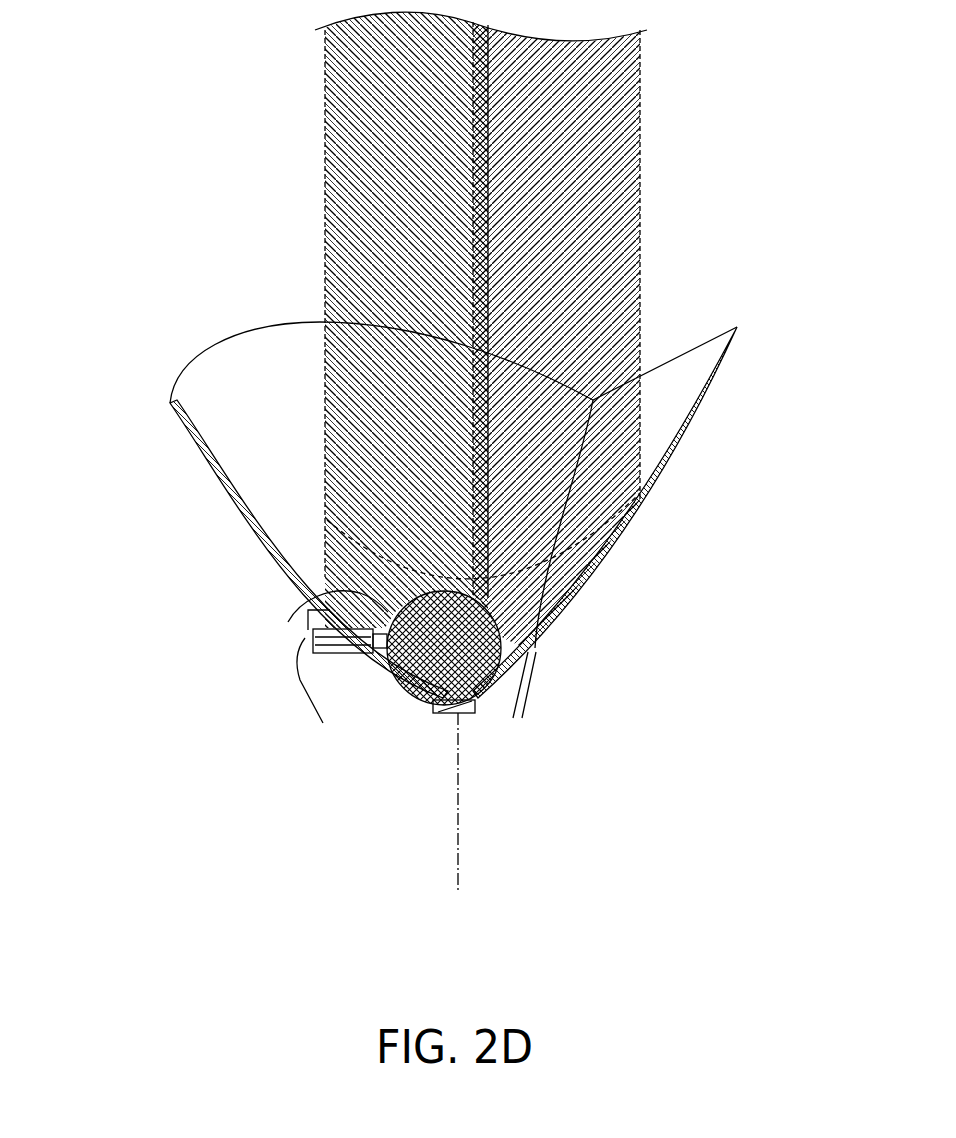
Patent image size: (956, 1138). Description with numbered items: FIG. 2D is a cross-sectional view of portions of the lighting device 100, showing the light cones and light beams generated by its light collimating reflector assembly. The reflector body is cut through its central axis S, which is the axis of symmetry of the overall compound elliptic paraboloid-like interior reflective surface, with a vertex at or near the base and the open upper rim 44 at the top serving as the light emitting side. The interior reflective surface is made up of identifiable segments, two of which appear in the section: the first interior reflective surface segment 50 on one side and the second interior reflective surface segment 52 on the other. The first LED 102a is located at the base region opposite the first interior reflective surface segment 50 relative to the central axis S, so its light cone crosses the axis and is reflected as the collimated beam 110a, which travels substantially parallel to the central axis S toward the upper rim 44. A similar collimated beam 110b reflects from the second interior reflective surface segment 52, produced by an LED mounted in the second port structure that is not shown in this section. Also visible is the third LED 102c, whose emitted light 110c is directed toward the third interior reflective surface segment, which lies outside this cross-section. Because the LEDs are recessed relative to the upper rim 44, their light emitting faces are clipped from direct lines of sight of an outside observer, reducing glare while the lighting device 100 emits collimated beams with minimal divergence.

The lighting device 100 is at (215, 195).
The collimated beam 110a is at (612, 205).
The collimated beam 110b is at (352, 190).
The light emitted from the third LED 110c is at (382, 607).
The upper rim 44 is at (222, 330).
The first interior reflective surface segment 50 is at (685, 378).
The second interior reflective surface segment 52 is at (237, 428).
The first LED 102a is at (340, 658).
The third LED 102c is at (535, 648).
The central axis S is at (458, 800).